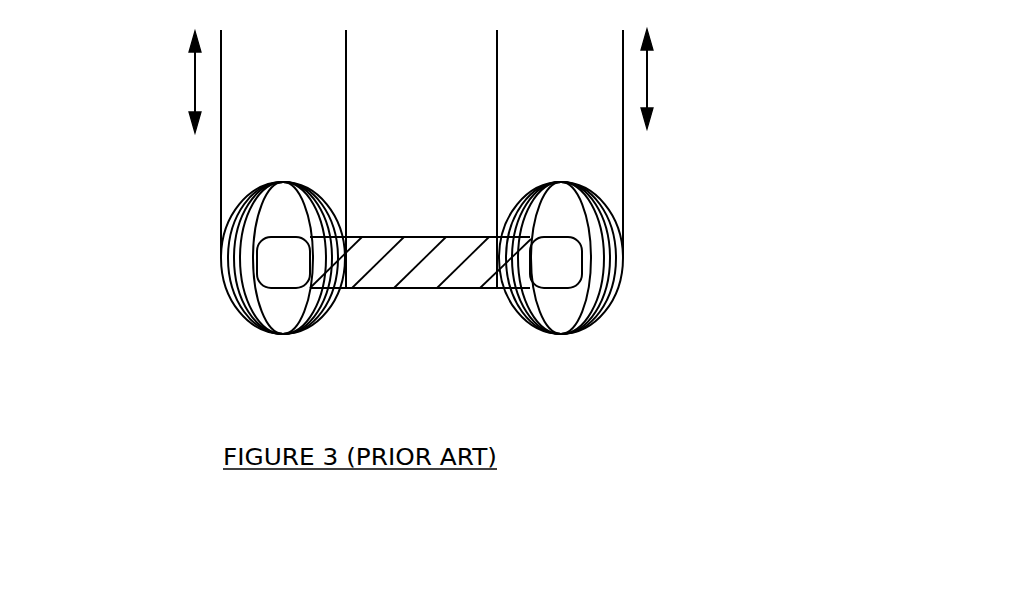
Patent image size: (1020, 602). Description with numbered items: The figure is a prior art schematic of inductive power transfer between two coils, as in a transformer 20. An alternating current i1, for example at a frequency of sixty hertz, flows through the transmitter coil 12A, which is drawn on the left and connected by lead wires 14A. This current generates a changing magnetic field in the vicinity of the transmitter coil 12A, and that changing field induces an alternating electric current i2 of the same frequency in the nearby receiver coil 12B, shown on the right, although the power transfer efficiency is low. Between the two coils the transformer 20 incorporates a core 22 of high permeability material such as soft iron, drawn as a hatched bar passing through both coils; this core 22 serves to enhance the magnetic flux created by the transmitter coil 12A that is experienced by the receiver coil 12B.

The transformer 20 is at (478, 366).
The lead wires 14A is at (221, 160).
The core 22 is at (387, 277).
The transmitter coil 12A is at (232, 304).
The receiver coil 12B is at (504, 302).
The alternating current i1 is at (194, 92).
The induced alternating electric current i2 is at (647, 83).